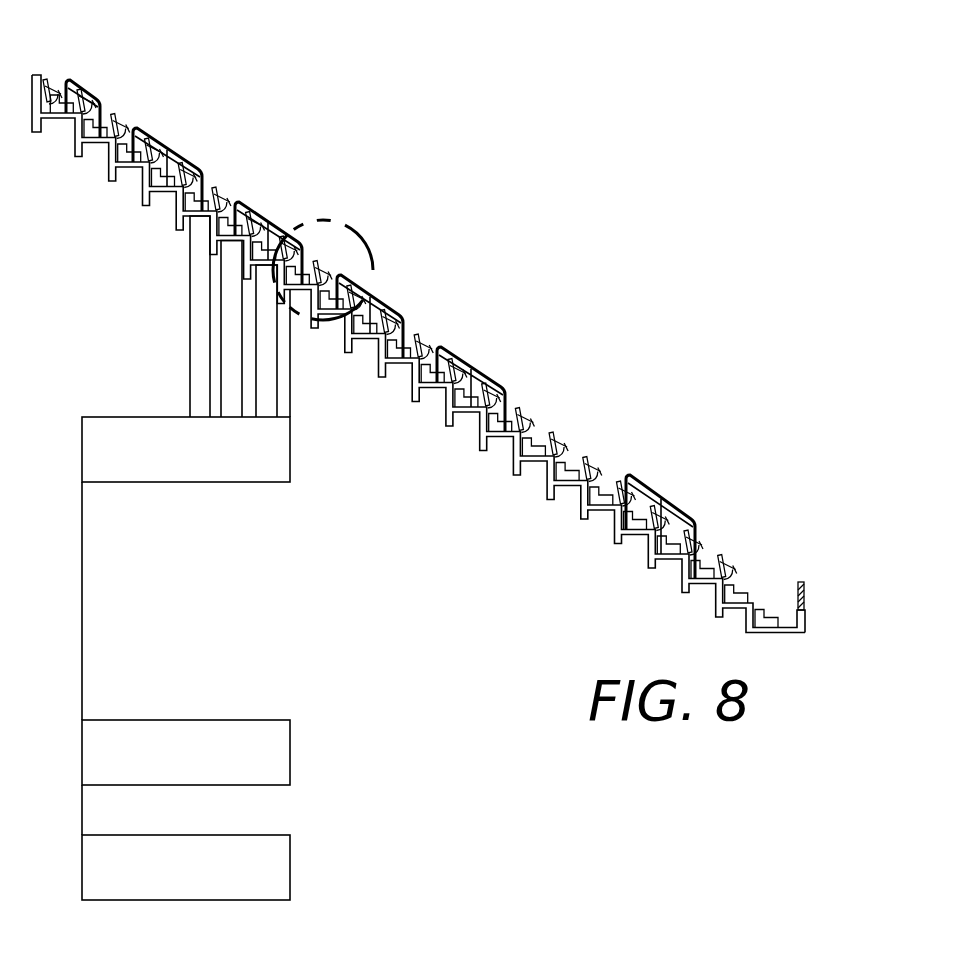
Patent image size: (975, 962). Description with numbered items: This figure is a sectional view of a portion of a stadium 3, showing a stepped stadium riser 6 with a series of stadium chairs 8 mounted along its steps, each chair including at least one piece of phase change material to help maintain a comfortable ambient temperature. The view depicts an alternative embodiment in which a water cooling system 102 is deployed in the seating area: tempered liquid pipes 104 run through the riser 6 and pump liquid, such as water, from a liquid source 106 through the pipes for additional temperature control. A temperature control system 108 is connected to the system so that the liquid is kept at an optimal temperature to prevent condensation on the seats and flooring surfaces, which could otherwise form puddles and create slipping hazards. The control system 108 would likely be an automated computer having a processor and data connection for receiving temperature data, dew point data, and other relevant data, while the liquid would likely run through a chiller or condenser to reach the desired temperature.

The stadium 3 is at (367, 290).
The riser 6 is at (112, 153).
The stadium chairs 8 is at (205, 192).
The water cooling system 102 is at (584, 106).
The tempered liquid pipes 104 is at (186, 349).
The liquid source 106 is at (186, 752).
The temperature control system 108 is at (186, 867).